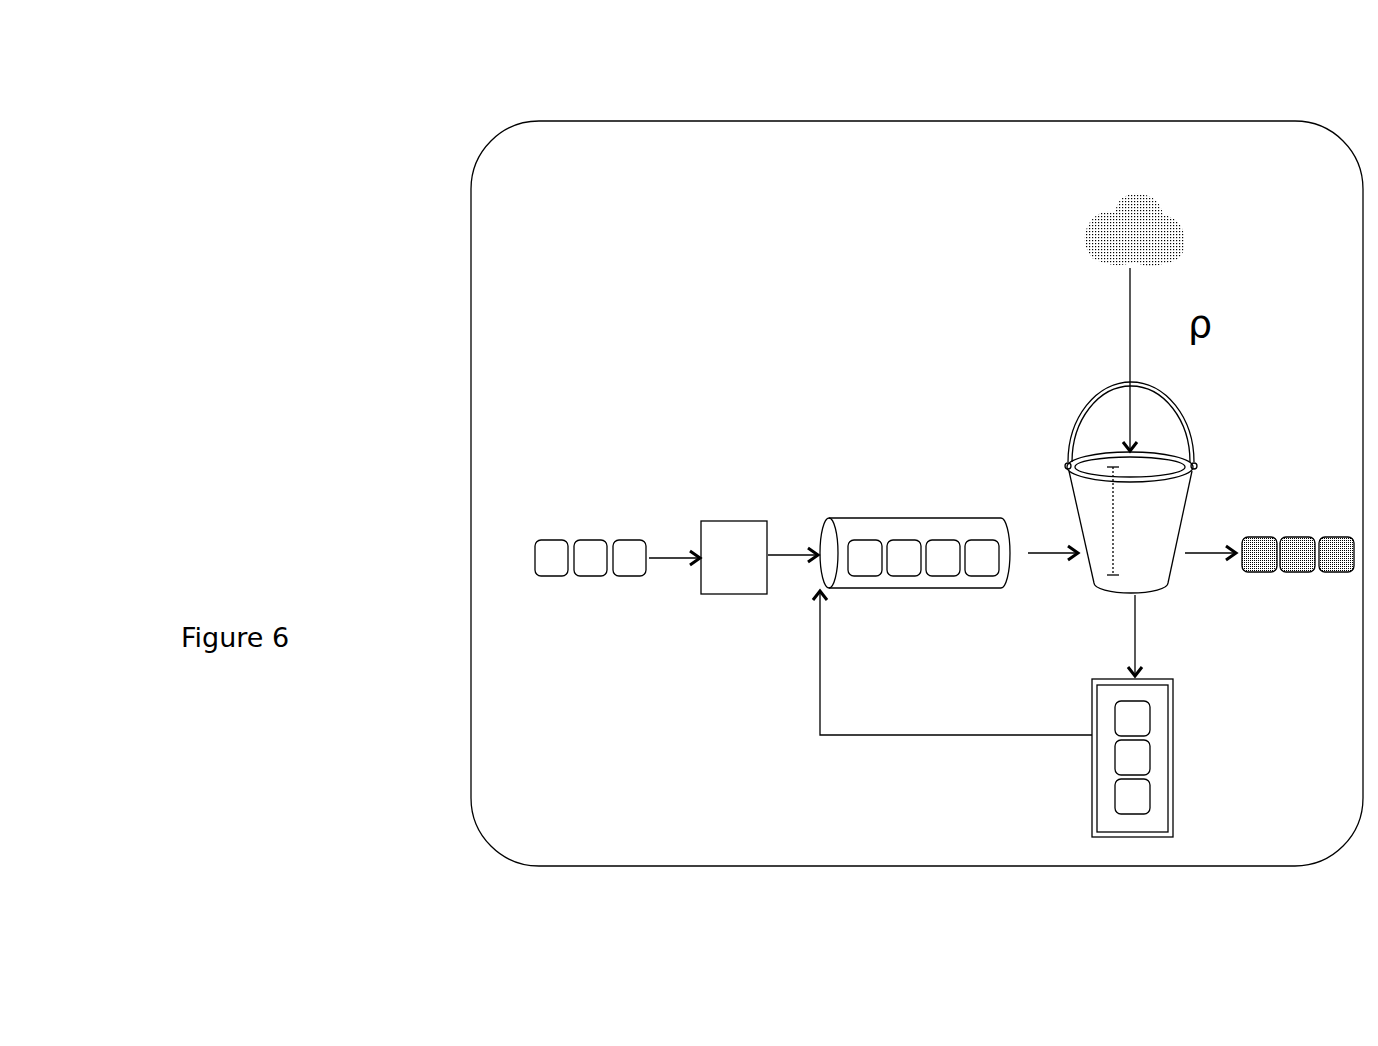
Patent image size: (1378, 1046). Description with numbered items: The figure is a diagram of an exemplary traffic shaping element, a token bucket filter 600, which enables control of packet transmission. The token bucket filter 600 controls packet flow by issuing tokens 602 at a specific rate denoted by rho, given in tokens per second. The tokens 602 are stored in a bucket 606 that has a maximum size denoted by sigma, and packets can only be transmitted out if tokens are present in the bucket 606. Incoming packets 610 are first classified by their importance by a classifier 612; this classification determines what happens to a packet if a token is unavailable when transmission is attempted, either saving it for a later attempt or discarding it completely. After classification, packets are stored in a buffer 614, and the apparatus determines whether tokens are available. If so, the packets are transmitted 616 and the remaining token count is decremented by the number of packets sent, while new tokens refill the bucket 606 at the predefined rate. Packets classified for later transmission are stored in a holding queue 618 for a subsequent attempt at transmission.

The token bucket filter 600 is at (1054, 121).
The tokens 602 is at (1146, 192).
The bucket 606 is at (1177, 452).
The incoming packets 610 is at (558, 540).
The classifier 612 is at (731, 521).
The buffer 614 is at (900, 520).
The transmitted packets 616 is at (1277, 533).
The holding queue 618 is at (1163, 680).